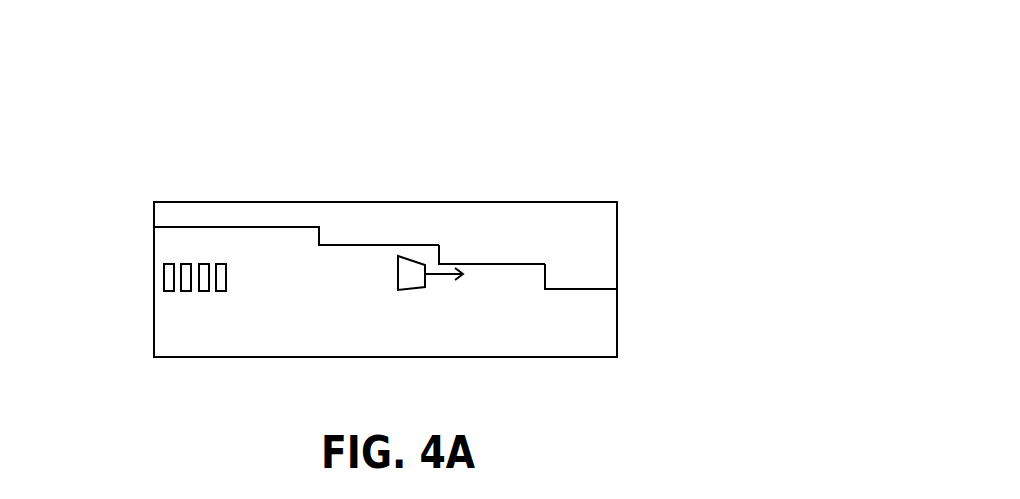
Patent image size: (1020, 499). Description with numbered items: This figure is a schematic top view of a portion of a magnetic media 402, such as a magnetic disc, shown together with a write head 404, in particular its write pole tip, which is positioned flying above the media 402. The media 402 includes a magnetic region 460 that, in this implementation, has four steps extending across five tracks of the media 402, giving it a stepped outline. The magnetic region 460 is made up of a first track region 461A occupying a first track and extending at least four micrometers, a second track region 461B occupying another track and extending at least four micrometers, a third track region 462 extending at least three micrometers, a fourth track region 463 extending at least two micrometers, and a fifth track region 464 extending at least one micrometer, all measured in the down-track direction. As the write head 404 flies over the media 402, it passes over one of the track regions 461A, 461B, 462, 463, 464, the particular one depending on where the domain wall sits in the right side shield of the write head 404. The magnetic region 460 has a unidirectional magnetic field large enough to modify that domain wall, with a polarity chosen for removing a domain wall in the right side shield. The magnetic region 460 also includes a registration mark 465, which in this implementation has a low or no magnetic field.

The magnetic media 402 is at (597, 90).
The write head 404 is at (422, 264).
The magnetic region 460 is at (619, 318).
The first track region 461A is at (617, 347).
The second track region 461B is at (618, 300).
The third track region 462 is at (488, 264).
The fourth track region 463 is at (378, 245).
The fifth track region 464 is at (205, 227).
The registration mark 465 is at (154, 279).